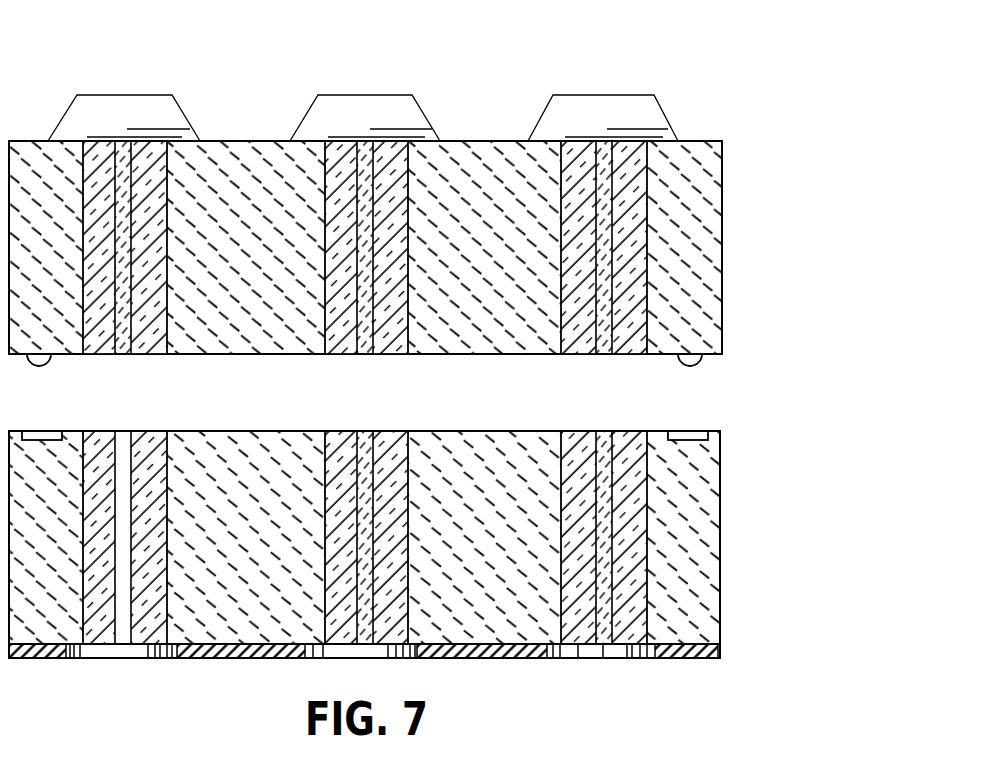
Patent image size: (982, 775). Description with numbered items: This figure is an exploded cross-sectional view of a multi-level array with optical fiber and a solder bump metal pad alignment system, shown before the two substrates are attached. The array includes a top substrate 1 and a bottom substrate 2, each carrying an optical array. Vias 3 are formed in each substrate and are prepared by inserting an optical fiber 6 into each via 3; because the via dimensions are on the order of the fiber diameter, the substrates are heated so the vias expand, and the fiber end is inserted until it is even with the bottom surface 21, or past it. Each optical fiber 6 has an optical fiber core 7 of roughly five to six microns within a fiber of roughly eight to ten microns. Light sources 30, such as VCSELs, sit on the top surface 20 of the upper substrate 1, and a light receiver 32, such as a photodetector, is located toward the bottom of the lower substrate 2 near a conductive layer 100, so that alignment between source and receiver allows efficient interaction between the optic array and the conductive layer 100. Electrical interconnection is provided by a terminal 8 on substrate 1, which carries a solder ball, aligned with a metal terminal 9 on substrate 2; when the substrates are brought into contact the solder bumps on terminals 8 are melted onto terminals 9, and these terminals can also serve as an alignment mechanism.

The top substrate 1 is at (722, 230).
The bottom substrate 2 is at (720, 522).
The via 3 is at (563, 646).
The optical fiber 6 is at (566, 600).
The optical fiber core 7 is at (602, 648).
The terminal 8 is at (699, 365).
The terminal 9 is at (677, 431).
The top surface 20 is at (480, 141).
The bottom surface 21 is at (468, 658).
The light source 30 is at (107, 107).
The light receiver 32 is at (633, 648).
The conductive layer 100 is at (718, 647).